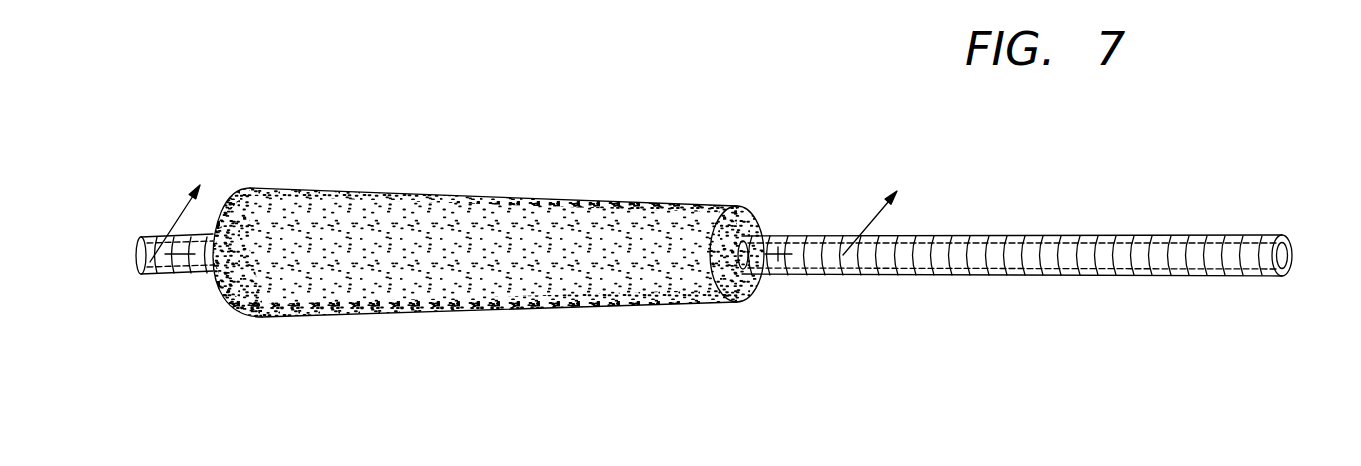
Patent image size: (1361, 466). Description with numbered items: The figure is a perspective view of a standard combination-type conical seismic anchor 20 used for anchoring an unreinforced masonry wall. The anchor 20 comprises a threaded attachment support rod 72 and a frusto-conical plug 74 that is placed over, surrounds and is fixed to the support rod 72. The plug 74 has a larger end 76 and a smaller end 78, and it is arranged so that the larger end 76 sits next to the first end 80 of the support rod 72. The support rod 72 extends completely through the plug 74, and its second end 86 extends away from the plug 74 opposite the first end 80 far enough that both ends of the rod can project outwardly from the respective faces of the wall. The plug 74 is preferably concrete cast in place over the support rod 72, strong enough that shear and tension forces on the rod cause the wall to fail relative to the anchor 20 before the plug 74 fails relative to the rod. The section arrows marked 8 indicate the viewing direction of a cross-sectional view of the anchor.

The conical seismic anchor 20 is at (518, 174).
The threaded attachment support rod 72 is at (1050, 230).
The frusto-conical plug 74 is at (662, 225).
The larger end 76 is at (225, 298).
The smaller end 78 is at (758, 288).
The first end 80 is at (137, 255).
The second end 86 is at (1295, 254).
The section view direction FIG. 8 is at (522, 223).